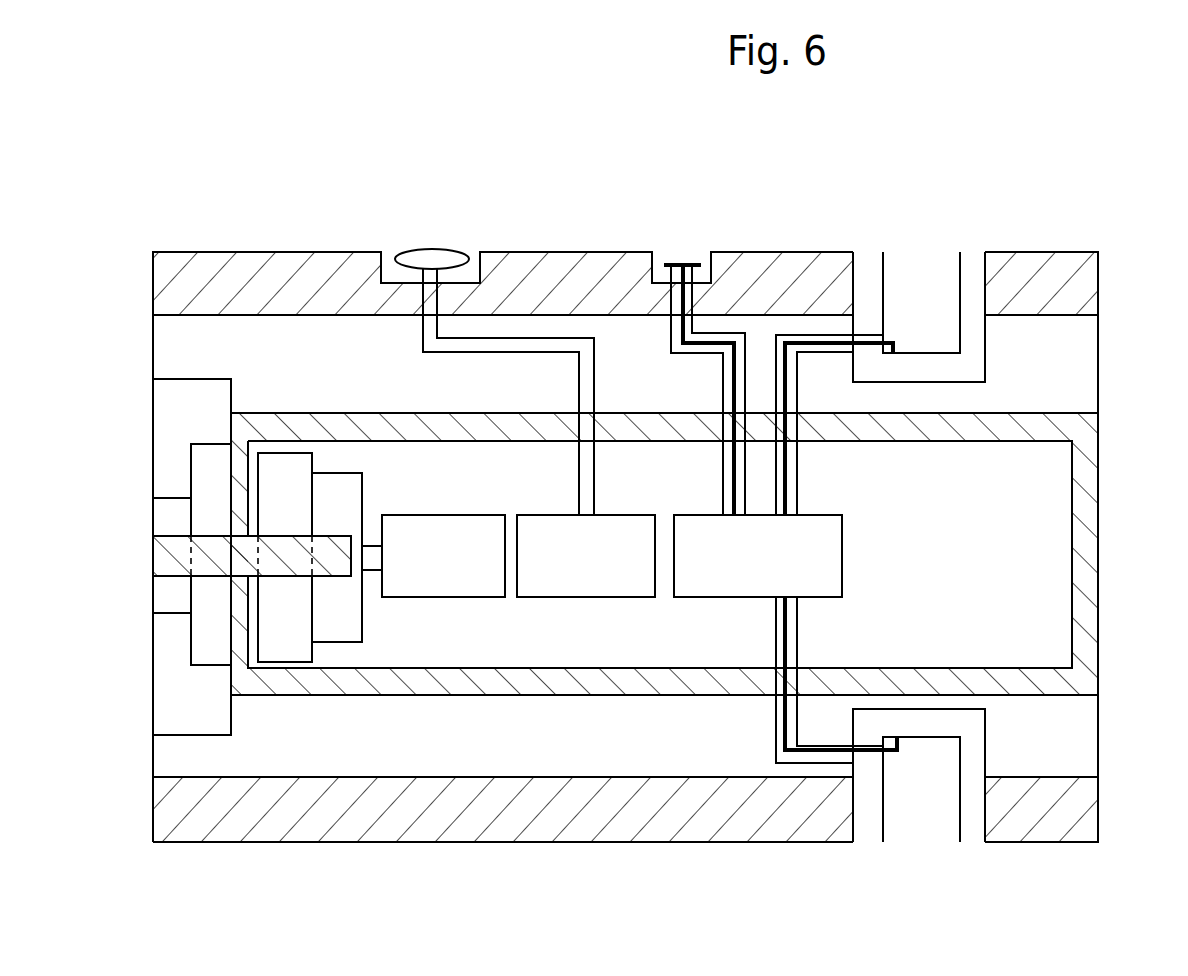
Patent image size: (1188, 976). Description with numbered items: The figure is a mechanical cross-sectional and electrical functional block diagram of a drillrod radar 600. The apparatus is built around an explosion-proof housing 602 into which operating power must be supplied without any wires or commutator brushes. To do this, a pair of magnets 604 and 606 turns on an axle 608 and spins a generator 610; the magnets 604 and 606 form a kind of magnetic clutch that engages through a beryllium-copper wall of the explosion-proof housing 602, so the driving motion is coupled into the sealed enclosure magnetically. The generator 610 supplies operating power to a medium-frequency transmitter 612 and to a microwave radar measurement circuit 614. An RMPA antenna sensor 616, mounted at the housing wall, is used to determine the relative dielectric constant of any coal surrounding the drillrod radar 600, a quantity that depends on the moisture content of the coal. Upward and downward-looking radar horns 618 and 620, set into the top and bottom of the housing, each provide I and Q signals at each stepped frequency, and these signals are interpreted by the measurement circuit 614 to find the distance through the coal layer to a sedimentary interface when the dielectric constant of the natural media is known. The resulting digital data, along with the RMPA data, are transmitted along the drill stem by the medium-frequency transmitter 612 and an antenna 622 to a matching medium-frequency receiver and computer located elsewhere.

The drillrod radar 600 is at (928, 148).
The explosion-proof housing 602 is at (1087, 553).
The magnet 604 is at (212, 444).
The magnet 606 is at (268, 507).
The axle 608 is at (158, 563).
The generator 610 is at (423, 515).
The medium-frequency transmitter 612 is at (567, 597).
The microwave radar measurement circuit 614 is at (842, 538).
The RMPA antenna sensor 616 is at (698, 262).
The upward-looking radar horn 618 is at (900, 297).
The downward-looking radar horn 620 is at (903, 797).
The antenna 622 is at (460, 252).